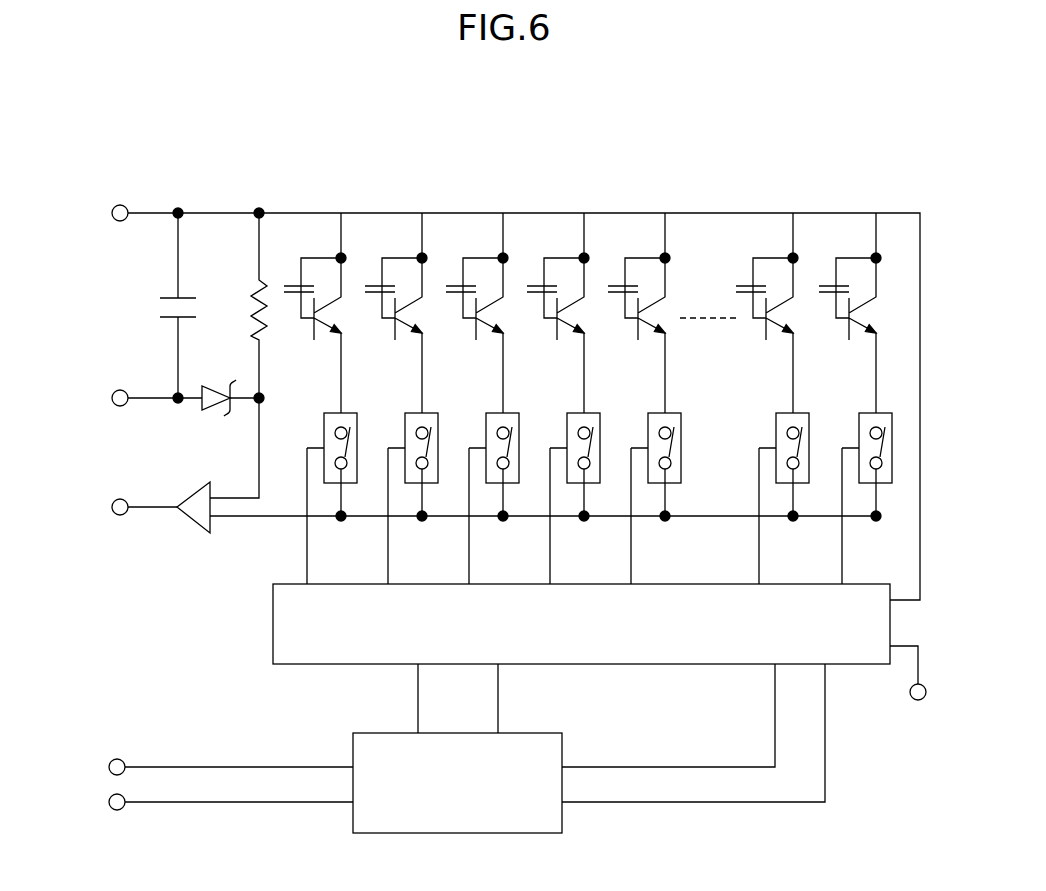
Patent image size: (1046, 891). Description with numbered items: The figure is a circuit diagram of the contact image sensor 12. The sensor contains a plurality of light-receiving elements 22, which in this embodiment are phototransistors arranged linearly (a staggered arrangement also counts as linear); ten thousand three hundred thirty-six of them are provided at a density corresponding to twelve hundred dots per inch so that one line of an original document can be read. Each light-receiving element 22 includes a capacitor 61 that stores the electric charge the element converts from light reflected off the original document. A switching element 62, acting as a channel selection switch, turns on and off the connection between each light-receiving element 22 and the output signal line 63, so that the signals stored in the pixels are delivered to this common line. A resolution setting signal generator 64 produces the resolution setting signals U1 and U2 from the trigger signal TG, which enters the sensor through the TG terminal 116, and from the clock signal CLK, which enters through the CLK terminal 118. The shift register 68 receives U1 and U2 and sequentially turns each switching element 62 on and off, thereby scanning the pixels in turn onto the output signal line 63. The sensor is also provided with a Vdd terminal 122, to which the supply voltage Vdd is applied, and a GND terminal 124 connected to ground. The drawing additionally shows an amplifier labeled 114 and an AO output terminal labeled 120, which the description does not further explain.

The contact image sensor 12 is at (293, 130).
The light-receiving element 22 is at (314, 340).
The capacitor 61 is at (295, 282).
The switching element 62 is at (356, 458).
The output signal line 63 is at (297, 515).
The resolution setting signal generator 64 is at (375, 733).
The shift register 68 is at (293, 583).
The amplifier 114 is at (190, 520).
The TG terminal 116 is at (112, 759).
The CLK terminal 118 is at (115, 811).
The AO terminal 120 is at (120, 517).
The Vdd terminal 122 is at (122, 223).
The GND terminal 124 is at (120, 408).